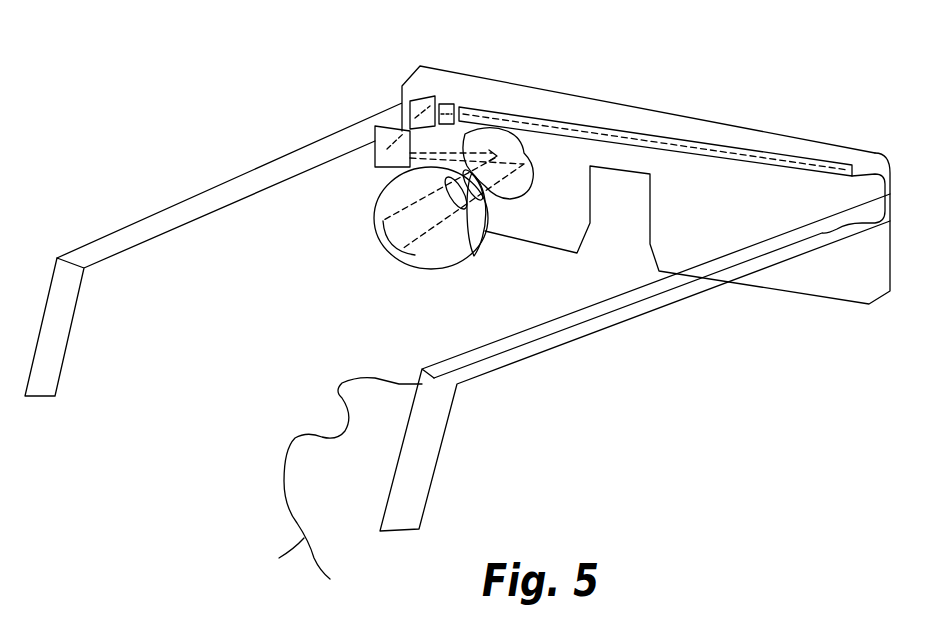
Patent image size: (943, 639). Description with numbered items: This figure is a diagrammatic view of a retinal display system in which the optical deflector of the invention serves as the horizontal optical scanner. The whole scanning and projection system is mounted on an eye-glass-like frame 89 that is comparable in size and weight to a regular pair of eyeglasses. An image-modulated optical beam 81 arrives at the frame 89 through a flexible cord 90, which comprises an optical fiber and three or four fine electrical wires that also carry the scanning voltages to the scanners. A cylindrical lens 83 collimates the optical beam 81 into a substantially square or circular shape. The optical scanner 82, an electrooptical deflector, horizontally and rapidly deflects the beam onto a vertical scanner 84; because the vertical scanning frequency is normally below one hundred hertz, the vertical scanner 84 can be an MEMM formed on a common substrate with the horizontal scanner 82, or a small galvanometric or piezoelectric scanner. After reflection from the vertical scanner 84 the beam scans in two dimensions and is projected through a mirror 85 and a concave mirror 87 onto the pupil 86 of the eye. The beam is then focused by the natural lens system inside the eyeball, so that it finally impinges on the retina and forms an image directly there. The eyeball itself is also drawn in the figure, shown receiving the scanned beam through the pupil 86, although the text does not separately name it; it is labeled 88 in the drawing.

The optical beam 81 is at (828, 165).
The optical scanner 82 is at (520, 117).
The cylindrical lens 83 is at (448, 103).
The vertical scanner 84 is at (428, 97).
The mirror 85 is at (373, 152).
The pupil 86 is at (472, 255).
The concave mirror 87 is at (502, 190).
The eye 88 is at (375, 240).
The eye-glass-like frame 89 is at (668, 112).
The flexible cord 90 is at (328, 578).